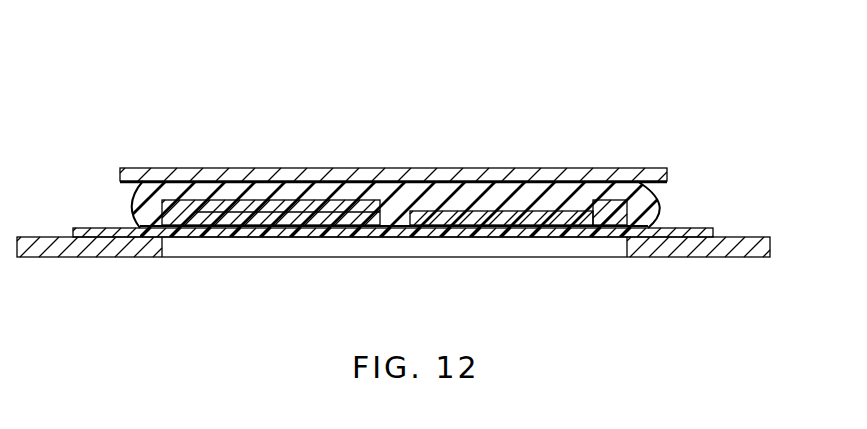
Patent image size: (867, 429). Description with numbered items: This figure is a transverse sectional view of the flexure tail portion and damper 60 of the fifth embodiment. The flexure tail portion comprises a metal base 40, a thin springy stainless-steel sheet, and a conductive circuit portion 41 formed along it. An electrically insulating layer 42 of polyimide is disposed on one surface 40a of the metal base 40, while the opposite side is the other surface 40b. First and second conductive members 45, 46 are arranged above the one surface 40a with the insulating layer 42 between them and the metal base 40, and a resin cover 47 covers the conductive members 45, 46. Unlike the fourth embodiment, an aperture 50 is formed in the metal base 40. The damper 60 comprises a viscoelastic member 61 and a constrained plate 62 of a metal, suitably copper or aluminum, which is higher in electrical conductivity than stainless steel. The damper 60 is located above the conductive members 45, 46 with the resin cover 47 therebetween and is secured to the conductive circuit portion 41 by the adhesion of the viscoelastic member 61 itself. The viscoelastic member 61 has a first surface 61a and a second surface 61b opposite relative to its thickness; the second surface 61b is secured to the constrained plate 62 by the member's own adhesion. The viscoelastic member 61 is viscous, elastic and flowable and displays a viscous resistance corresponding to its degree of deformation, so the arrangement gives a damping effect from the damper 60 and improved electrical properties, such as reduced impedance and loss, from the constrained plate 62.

The metal base 40 is at (655, 245).
The one surface of the metal base 40a is at (673, 228).
The other surface of the metal base 40b is at (698, 247).
The conductive circuit portion 41 is at (213, 189).
The electrically insulating layer 42 is at (313, 233).
The first conductive member 45 is at (262, 200).
The second conductive member 46 is at (520, 211).
The resin cover 47 is at (599, 201).
The aperture 50 is at (396, 245).
The damper 60 is at (291, 165).
The viscoelastic member 61 is at (431, 183).
The first surface of the viscoelastic member 61a is at (461, 203).
The second surface of the viscoelastic member 61b is at (471, 186).
The constrained plate 62 is at (353, 183).